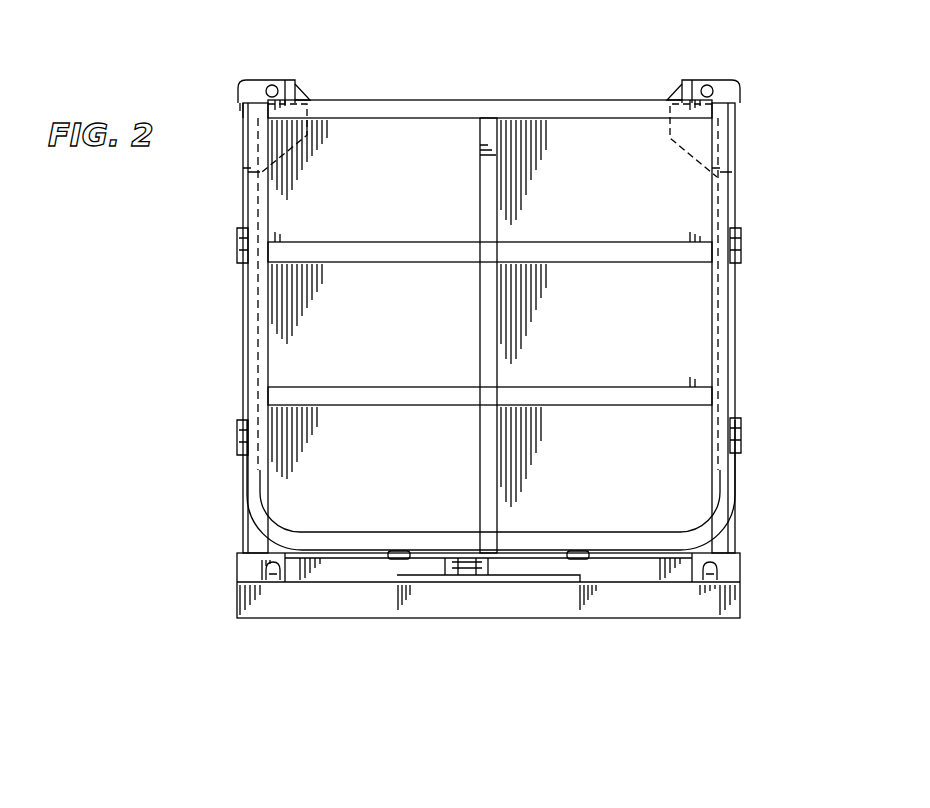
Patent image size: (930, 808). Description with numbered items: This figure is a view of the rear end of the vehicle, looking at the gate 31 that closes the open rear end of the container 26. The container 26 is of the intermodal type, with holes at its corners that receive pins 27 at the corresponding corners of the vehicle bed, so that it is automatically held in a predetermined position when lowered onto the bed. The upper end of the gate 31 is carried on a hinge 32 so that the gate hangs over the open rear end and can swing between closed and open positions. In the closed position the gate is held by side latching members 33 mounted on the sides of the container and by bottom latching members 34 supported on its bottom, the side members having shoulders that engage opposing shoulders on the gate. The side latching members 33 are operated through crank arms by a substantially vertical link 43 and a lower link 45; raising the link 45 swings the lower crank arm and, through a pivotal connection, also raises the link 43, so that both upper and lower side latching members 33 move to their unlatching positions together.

The container 26 is at (735, 190).
The pins 27 is at (718, 566).
The gate 31 is at (636, 326).
The hinge 32 is at (262, 80).
The side latching members 33 is at (240, 250).
The bottom latching members 34 is at (396, 560).
The link 43 is at (245, 174).
The link 45 is at (735, 324).